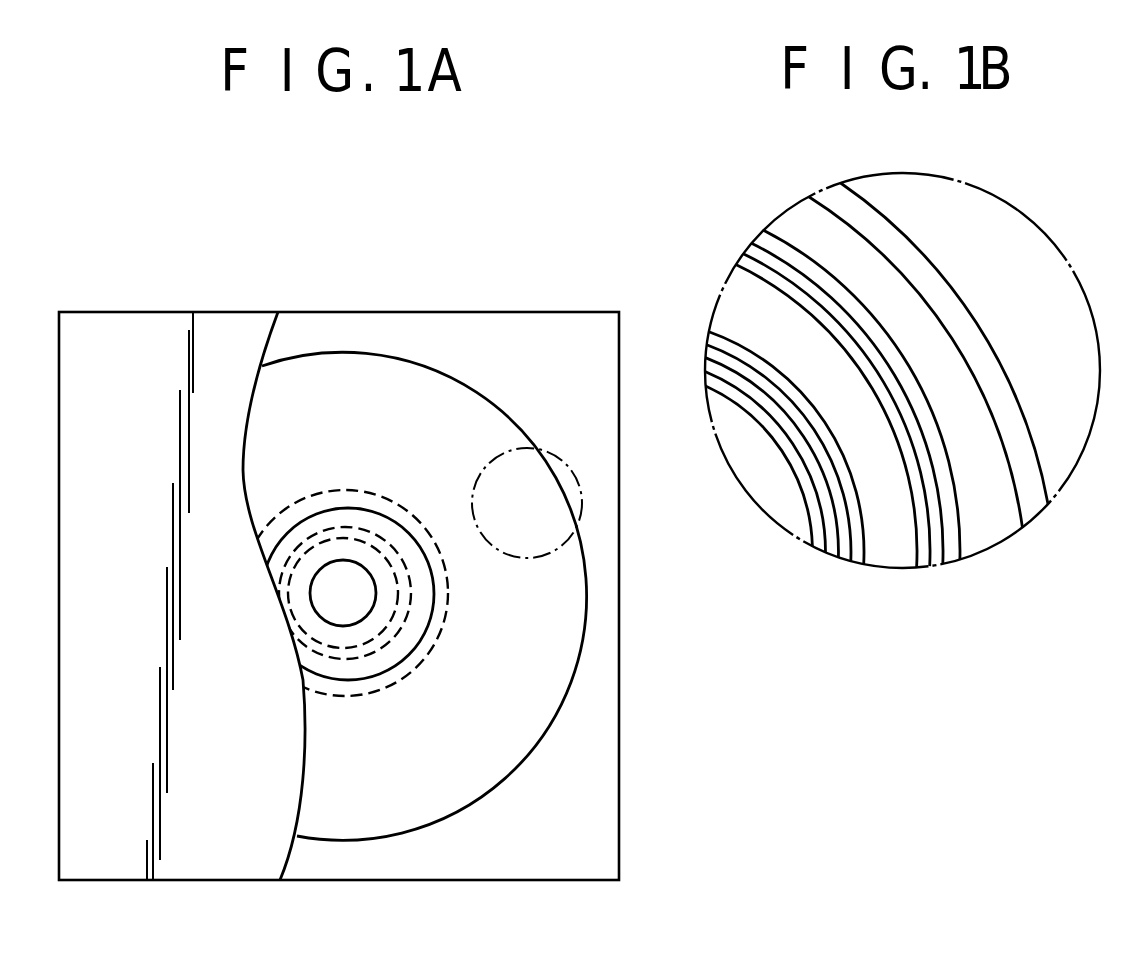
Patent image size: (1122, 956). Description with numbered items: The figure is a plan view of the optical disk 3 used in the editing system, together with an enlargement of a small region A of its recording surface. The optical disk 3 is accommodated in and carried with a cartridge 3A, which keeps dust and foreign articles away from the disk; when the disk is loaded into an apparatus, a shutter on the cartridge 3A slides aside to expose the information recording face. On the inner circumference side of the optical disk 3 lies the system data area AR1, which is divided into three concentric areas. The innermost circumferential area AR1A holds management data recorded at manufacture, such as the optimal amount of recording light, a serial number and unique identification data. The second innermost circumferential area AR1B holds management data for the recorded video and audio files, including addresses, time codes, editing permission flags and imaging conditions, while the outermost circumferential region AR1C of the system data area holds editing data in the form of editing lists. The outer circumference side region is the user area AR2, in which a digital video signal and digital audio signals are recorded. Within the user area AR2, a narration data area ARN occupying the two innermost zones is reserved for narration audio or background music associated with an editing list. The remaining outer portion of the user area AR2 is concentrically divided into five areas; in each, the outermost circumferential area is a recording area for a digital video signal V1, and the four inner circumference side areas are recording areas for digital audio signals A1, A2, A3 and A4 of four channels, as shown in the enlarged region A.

In FIG. 1A, the optical disk 3 is at (292, 296).
In FIG. 1B, the optical disk 3 is at (990, 350).
In FIG. 1A, the cartridge 3A is at (613, 724).
In FIG. 1A, the enlarged region A is at (698, 417).
In FIG. 1A, the system data area AR1 is at (347, 657).
In FIG. 1A, the innermost circumferential area AR1A is at (350, 547).
In FIG. 1A, the second innermost circumferential area AR1B is at (402, 675).
In FIG. 1A, the outermost circumferential region of the system data area AR1C is at (421, 630).
In FIG. 1A, the user area AR2 is at (486, 771).
In FIG. 1A, the narration data area ARN is at (314, 500).
In FIG. 1B, the digital audio signal recording area A1 is at (710, 330).
In FIG. 1B, the digital audio signal recording area A2 is at (709, 346).
In FIG. 1B, the digital audio signal recording area A3 is at (706, 359).
In FIG. 1B, the digital audio signal recording area A4 is at (705, 375).
In FIG. 1B, the digital video signal recording area V1 is at (733, 297).